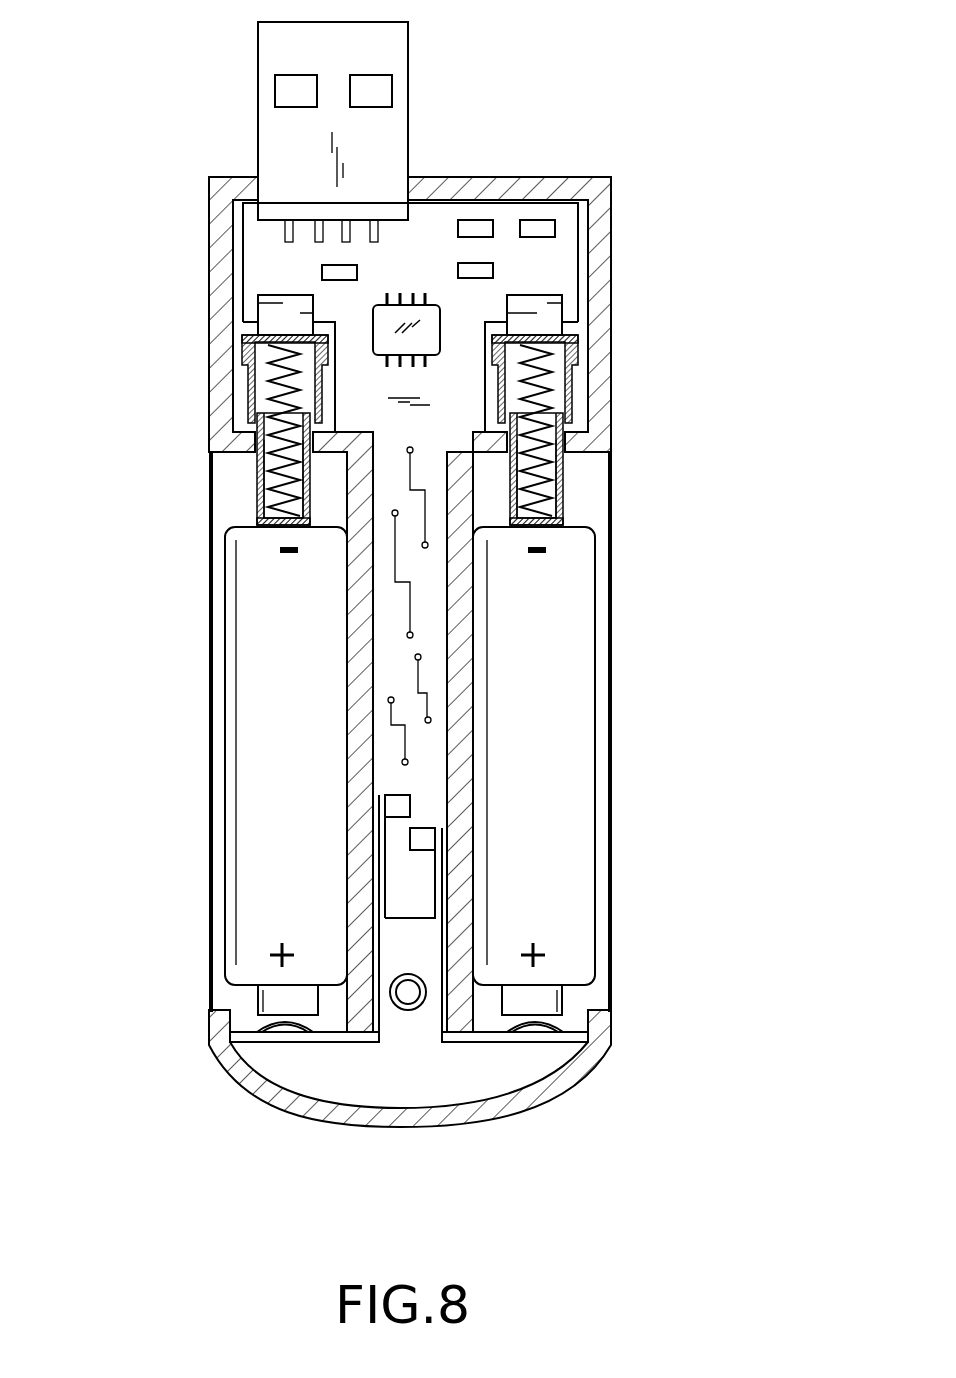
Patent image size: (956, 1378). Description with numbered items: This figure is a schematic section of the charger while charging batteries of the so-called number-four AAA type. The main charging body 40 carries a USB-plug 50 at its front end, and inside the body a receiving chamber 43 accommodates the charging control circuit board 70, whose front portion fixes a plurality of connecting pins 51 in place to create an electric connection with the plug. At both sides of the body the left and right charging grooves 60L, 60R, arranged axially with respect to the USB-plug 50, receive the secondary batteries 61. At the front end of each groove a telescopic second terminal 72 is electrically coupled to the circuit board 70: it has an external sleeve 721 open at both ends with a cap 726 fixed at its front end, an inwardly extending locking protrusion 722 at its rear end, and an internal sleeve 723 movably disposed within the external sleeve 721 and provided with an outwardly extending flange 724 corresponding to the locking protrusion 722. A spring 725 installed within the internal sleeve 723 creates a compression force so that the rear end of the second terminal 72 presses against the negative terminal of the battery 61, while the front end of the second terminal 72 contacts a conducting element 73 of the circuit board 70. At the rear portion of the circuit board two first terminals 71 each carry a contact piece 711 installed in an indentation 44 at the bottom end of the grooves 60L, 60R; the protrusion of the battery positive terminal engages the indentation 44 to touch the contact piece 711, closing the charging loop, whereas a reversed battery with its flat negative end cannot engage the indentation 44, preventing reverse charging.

The main charging body 40 is at (180, 115).
The USB-plug 50 is at (392, 45).
The connecting pins 51 is at (378, 240).
The charging control circuit board 70 is at (555, 262).
The conducting element 73 is at (290, 303).
The second terminal 72 is at (466, 460).
The external sleeve 721 is at (578, 405).
The locking protrusion 722 is at (566, 470).
The internal sleeve 723 is at (495, 557).
The flange 724 is at (568, 505).
The spring 725 is at (560, 382).
The cap 726 is at (580, 340).
The receiving chamber 43 is at (437, 628).
The left charging groove 60L is at (190, 752).
The right charging groove 60R is at (627, 755).
The secondary batteries 61 is at (248, 829).
The contact piece 711 is at (256, 1013).
The indentation 44 is at (252, 1025).
The first terminals 71 is at (305, 1036).